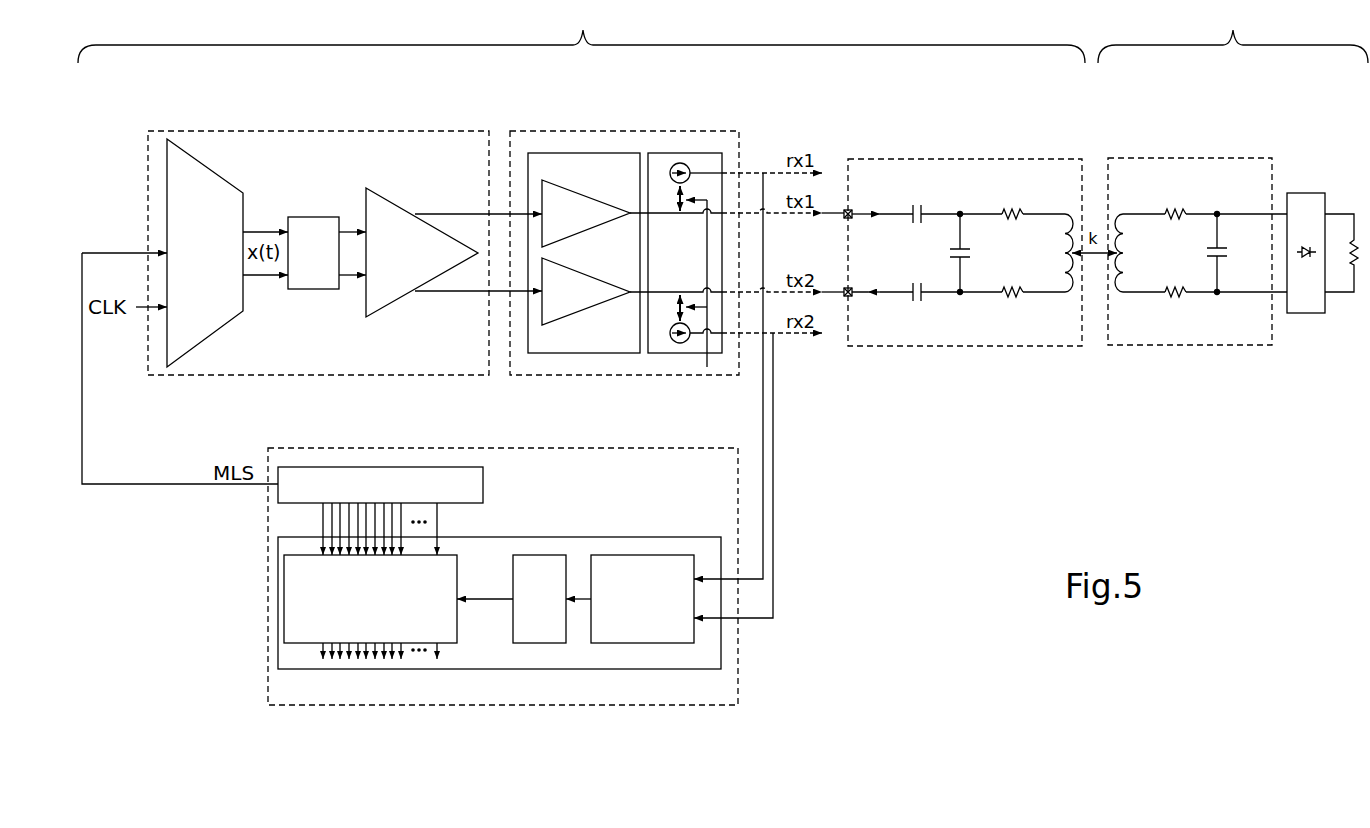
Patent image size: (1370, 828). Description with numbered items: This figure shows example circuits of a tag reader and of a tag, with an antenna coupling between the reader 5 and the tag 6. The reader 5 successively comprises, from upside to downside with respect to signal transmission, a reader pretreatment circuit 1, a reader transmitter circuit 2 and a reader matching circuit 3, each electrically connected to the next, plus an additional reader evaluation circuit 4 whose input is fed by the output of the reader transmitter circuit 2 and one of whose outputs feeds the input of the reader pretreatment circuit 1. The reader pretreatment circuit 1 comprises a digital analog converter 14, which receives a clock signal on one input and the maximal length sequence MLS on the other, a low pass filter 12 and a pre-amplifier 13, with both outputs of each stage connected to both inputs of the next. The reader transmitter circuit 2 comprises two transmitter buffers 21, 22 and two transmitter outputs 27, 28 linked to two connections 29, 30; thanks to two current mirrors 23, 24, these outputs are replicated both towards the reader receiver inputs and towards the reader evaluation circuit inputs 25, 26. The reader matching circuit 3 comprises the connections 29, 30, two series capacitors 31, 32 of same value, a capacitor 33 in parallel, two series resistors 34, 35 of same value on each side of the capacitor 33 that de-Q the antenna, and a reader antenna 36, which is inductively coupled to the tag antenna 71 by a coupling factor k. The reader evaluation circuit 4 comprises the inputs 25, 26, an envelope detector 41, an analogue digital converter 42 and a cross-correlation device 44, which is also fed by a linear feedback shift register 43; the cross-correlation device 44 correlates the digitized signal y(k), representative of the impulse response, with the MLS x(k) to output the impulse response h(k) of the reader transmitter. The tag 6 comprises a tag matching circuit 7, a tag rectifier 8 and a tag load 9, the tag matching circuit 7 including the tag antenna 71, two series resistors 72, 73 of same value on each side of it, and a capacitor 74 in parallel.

The reader pretreatment circuit 1 is at (478, 138).
The reader transmitter circuit 2 is at (724, 138).
The reader matching circuit 3 is at (1022, 168).
The reader evaluation circuit 4 is at (730, 686).
The reader 5 is at (581, 32).
The tag 6 is at (1233, 32).
The tag matching circuit 7 is at (1256, 165).
The tag rectifier 8 is at (1306, 313).
The tag load 9 is at (1358, 266).
The filter 12 is at (313, 217).
The pre-amplifier 13 is at (390, 214).
The digital-to-analog converter 14 is at (206, 168).
The transmitter buffer 21 is at (565, 195).
The transmitter buffer 22 is at (565, 310).
The current mirror 23 is at (672, 163).
The current mirror 24 is at (672, 343).
The reader evaluation circuit input 25 is at (763, 187).
The reader evaluation circuit input 26 is at (773, 470).
The transmitter output 27 is at (835, 212).
The transmitter output 28 is at (835, 300).
The connection 29 is at (853, 210).
The connection 30 is at (855, 296).
The series capacitor 31 is at (920, 208).
The series capacitor 32 is at (923, 297).
The capacitor 33 is at (965, 262).
The series resistor 34 is at (1022, 221).
The series resistor 35 is at (1013, 290).
The reader antenna 36 is at (1080, 220).
The envelope detector 41 is at (645, 635).
The analogue digital converter 42 is at (542, 635).
The linear feedback shift register 43 is at (450, 477).
The cross-correlation device 44 is at (447, 633).
The tag antenna 71 is at (1112, 282).
The series resistor 72 is at (1180, 217).
The series resistor 73 is at (1180, 287).
The capacitor 74 is at (1222, 243).